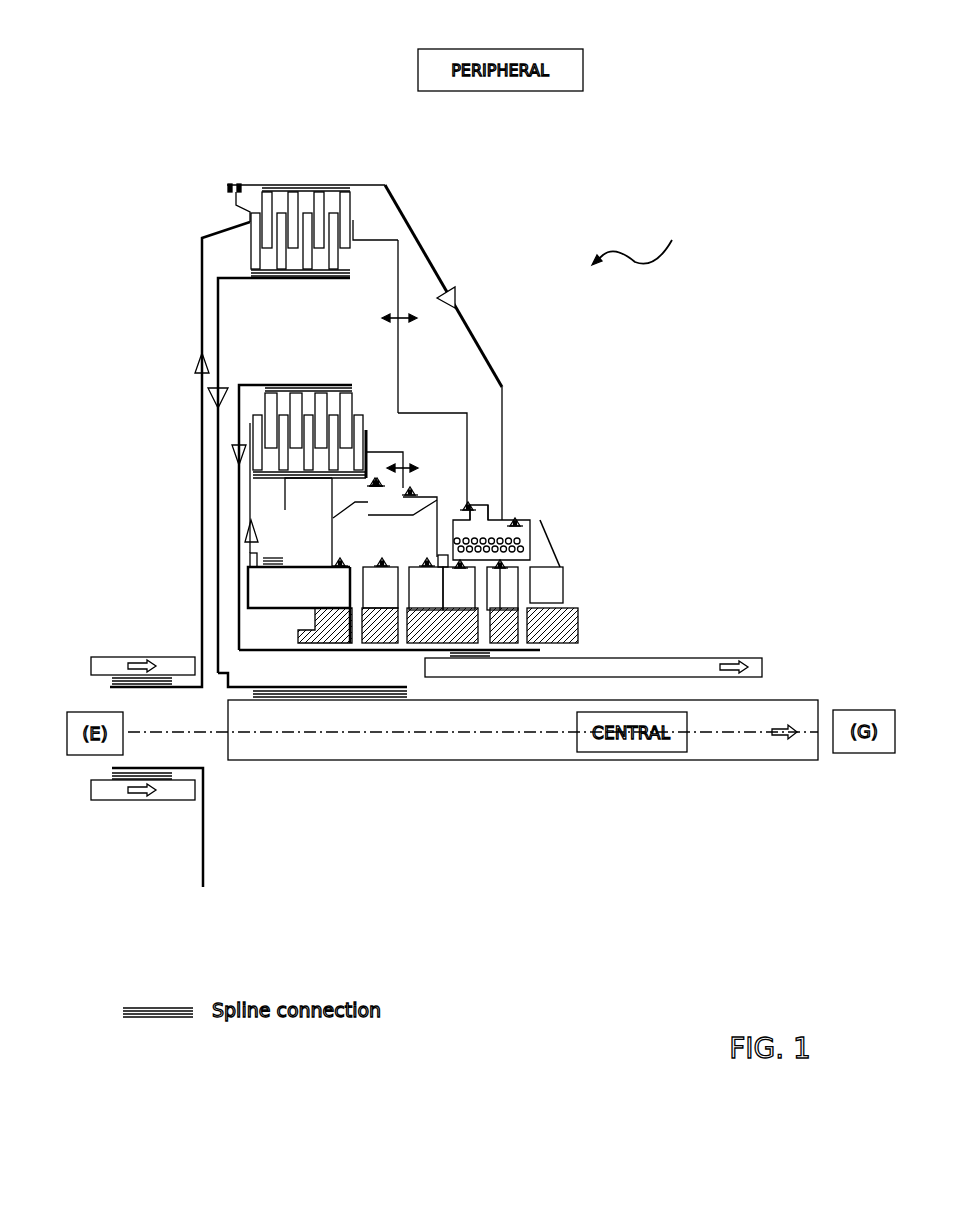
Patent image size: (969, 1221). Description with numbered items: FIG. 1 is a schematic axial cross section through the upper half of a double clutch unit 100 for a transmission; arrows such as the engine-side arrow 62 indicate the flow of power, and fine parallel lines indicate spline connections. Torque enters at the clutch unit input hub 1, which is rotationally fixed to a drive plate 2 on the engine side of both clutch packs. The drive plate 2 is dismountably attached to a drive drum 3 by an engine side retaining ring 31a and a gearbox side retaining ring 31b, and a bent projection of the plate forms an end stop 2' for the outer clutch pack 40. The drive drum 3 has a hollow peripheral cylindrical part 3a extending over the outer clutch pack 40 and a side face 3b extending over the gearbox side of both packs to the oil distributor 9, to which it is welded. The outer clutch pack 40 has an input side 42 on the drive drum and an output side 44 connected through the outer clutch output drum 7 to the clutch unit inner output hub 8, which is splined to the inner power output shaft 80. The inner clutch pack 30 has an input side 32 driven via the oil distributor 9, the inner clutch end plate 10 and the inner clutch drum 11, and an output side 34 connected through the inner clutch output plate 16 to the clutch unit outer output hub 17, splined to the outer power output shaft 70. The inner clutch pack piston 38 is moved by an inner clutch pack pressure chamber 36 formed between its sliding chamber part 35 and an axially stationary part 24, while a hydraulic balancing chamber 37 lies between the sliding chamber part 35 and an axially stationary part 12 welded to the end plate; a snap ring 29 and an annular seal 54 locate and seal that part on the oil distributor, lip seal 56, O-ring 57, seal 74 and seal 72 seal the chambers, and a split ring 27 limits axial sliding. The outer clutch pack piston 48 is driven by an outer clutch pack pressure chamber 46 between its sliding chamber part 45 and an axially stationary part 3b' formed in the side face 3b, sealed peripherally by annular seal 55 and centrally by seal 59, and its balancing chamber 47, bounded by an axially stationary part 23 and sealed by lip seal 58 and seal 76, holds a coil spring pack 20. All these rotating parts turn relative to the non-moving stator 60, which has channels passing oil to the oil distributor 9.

The clutch unit input hub 1 is at (203, 577).
The drive plate 2 is at (195, 311).
The engine side end stop 2' is at (204, 207).
The drive drum 3 is at (273, 184).
The hollow peripheral cylindrical part 3a is at (358, 185).
The side face 3b is at (443, 352).
The axially stationary part 3b' is at (641, 504).
The outer clutch output drum 7 is at (218, 330).
The clutch unit inner output hub 8 is at (245, 688).
The oil distributor 9 is at (565, 587).
The inner clutch end plate 10 is at (282, 510).
The inner clutch drum 11 is at (283, 512).
The axially stationary part 12 is at (415, 488).
The inner clutch output plate 16 is at (237, 435).
The clutch unit outer output hub 17 is at (305, 652).
The spring pack 20 is at (508, 548).
The axially stationary part 23 is at (533, 535).
The axially stationary part 24 is at (516, 518).
The split ring 27 is at (443, 610).
The snap ring 29 is at (248, 555).
The inner clutch pack 30 is at (370, 423).
The engine side retaining ring 31a is at (227, 185).
The gearbox side retaining ring 31b is at (247, 187).
The inner clutch pack input side 32 is at (270, 470).
The inner clutch pack output side 34 is at (308, 392).
The sliding chamber part 35 is at (462, 496).
The inner clutch pack pressure chamber 36 is at (398, 530).
The inner clutch pack piston hydraulic balancing chamber 37 is at (353, 528).
The inner clutch pack piston 38 is at (377, 451).
The outer clutch pack 40 is at (352, 208).
The outer clutch pack input side 42 is at (303, 192).
The outer clutch pack output side 44 is at (295, 267).
The sliding chamber part 45 is at (535, 550).
The outer clutch pack pressure chamber 46 is at (548, 562).
The outer clutch pack piston hydraulic balancing chamber 47 is at (479, 555).
The outer clutch pack piston 48 is at (400, 377).
The annular seal 54 is at (337, 570).
The annular seal 55 is at (525, 518).
The lip seal 56 is at (378, 530).
The O-ring 57 is at (427, 610).
The lip seal 58 is at (466, 610).
The seal 59 is at (500, 568).
The stator 60 is at (578, 650).
The input 62 is at (153, 711).
The outer power output shaft 70 is at (718, 677).
The seal 72 is at (382, 481).
The seal 74 is at (414, 490).
The seal 76 is at (530, 512).
The inner power output shaft 80 is at (777, 748).
The double clutch unit 100 is at (666, 223).